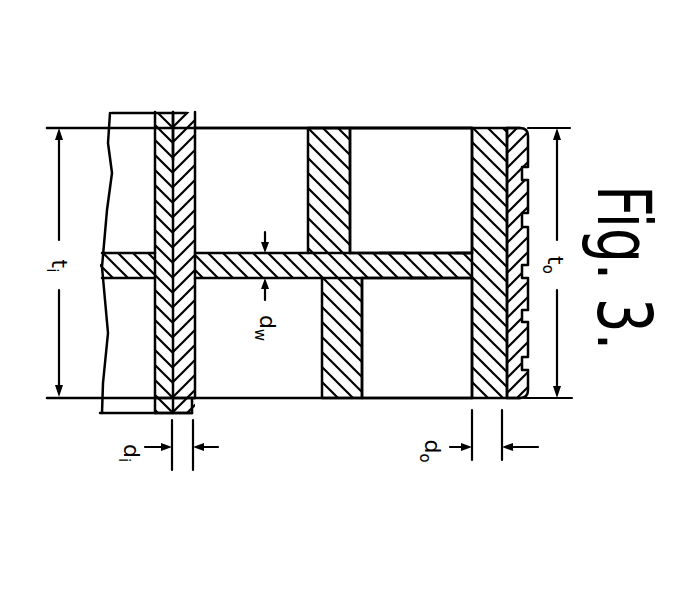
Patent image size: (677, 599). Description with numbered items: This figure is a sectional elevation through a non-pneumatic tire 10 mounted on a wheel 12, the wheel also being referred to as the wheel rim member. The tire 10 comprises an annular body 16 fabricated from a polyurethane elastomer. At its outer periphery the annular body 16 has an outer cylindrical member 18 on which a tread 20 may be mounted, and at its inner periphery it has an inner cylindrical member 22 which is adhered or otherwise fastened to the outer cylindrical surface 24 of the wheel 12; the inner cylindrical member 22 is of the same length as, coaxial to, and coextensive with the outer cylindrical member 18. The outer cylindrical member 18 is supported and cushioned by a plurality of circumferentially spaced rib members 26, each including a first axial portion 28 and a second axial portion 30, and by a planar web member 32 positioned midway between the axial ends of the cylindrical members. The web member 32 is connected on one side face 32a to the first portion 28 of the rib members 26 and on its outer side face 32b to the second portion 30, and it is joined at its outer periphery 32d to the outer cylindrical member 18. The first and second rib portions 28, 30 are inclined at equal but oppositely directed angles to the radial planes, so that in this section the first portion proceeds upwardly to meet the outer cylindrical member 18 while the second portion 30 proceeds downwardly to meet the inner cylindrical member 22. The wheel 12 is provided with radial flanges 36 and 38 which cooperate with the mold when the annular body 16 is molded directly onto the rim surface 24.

The tire 10 is at (540, 418).
The wheel 12 is at (118, 428).
The annular body 16 is at (410, 118).
The outer cylindrical member 18 is at (492, 128).
The tread 20 is at (510, 128).
The inner cylindrical member 22 is at (198, 158).
The outer cylindrical surface 24 is at (155, 141).
The rib member 26 is at (346, 432).
The first axial portion 28 is at (352, 180).
The second axial portion 30 is at (365, 378).
The web member 32 is at (423, 252).
The side face 32a is at (392, 252).
The outer side face 32b is at (420, 280).
The outer periphery 32d is at (467, 252).
The radial flange 36 is at (186, 112).
The radial flange 38 is at (186, 412).